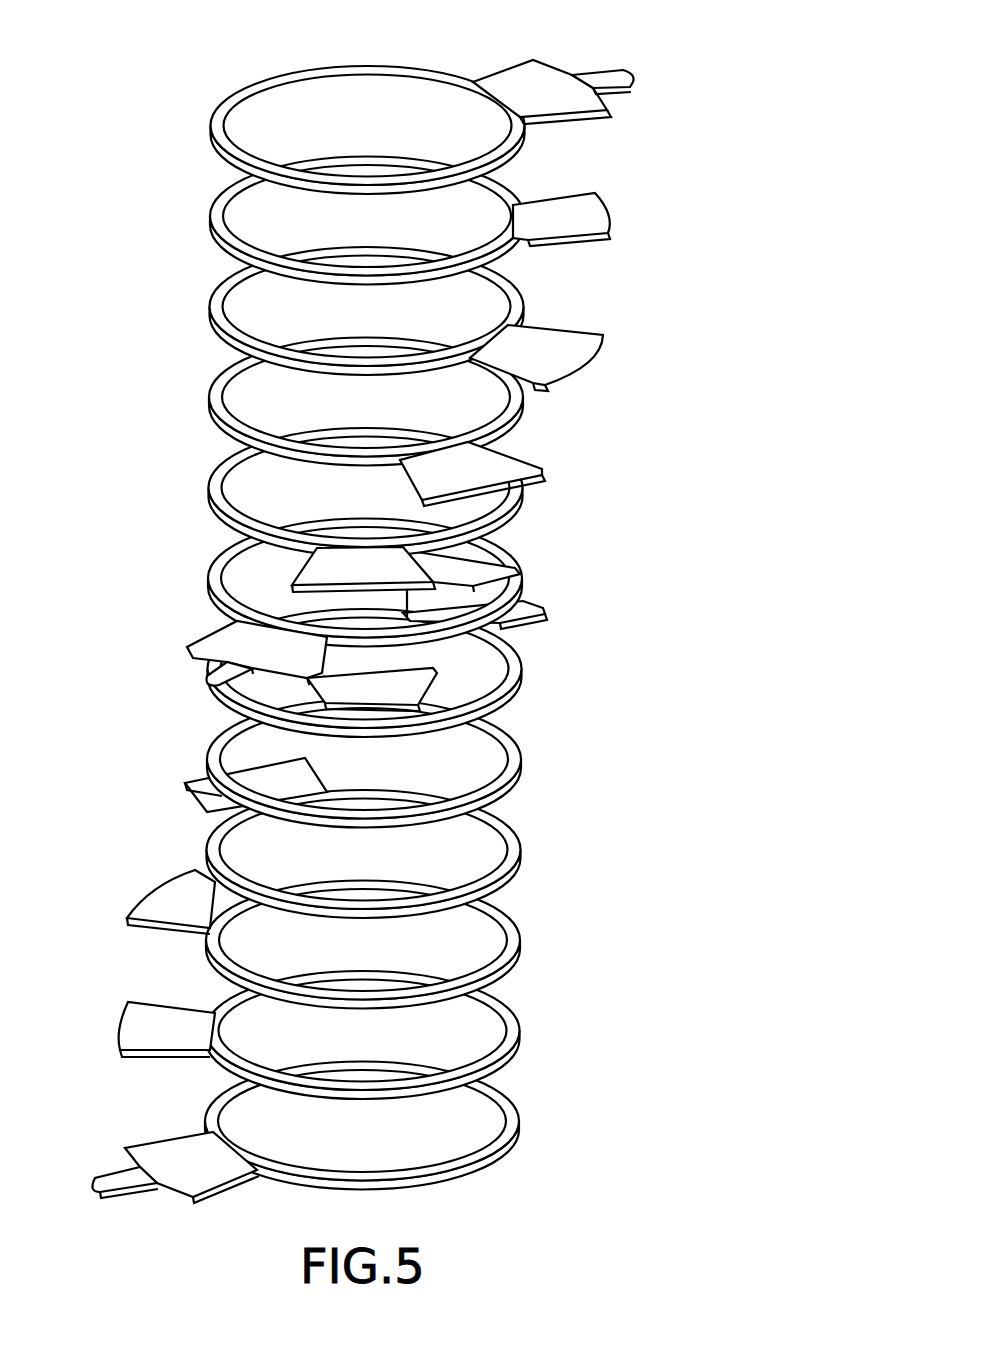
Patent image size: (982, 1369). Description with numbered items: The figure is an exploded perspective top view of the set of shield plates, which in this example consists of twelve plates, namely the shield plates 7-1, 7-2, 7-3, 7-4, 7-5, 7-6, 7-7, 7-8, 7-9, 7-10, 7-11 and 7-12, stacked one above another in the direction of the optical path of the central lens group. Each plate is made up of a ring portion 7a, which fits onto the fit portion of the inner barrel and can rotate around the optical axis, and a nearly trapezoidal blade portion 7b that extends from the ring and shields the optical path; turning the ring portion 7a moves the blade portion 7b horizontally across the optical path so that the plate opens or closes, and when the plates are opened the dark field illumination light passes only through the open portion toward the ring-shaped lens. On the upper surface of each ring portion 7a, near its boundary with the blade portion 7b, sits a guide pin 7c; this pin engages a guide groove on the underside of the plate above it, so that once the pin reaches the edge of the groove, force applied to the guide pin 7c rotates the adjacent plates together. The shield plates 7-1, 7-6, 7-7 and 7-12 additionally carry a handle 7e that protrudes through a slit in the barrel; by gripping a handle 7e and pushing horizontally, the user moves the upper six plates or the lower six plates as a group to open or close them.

The shield plate 7-1 is at (302, 108).
The shield plate 7-2 is at (190, 196).
The shield plate 7-3 is at (190, 287).
The shield plate 7-4 is at (190, 372).
The shield plate 7-5 is at (190, 462).
The shield plate 7-6 is at (190, 553).
The shield plate 7-7 is at (542, 666).
The shield plate 7-8 is at (542, 753).
The shield plate 7-9 is at (542, 845).
The shield plate 7-10 is at (542, 936).
The shield plate 7-11 is at (542, 1022).
The shield plate 7-12 is at (542, 1117).
The ring portion 7a is at (395, 72).
The blade portion 7b is at (543, 73).
The guide pin 7c is at (512, 205).
The handle 7e is at (615, 75).